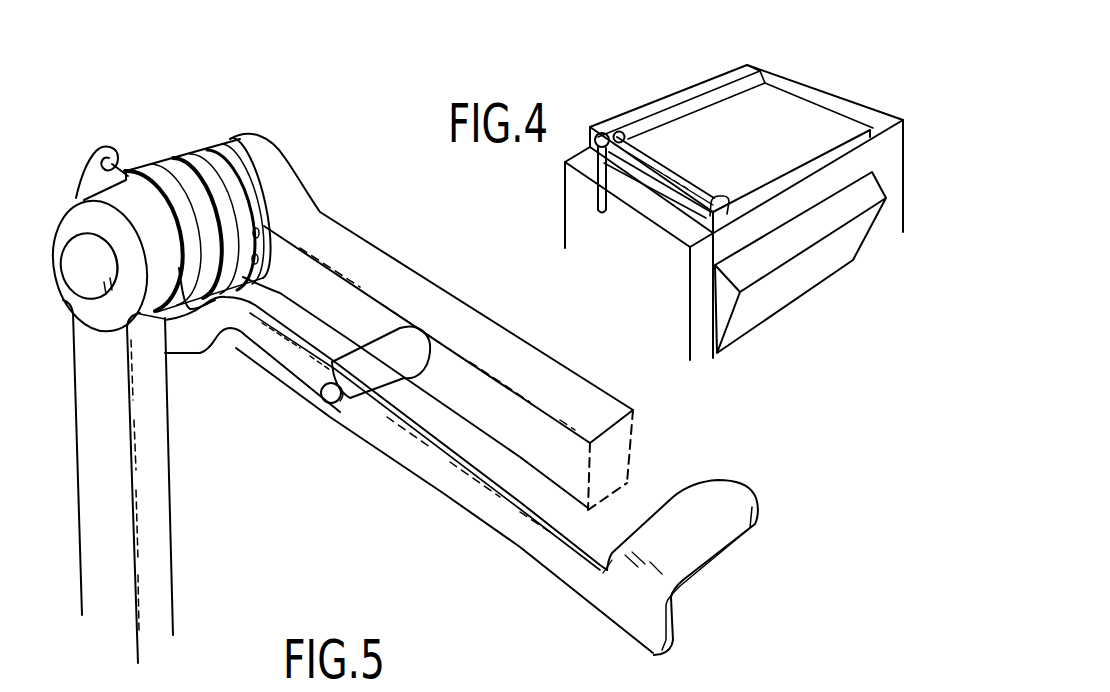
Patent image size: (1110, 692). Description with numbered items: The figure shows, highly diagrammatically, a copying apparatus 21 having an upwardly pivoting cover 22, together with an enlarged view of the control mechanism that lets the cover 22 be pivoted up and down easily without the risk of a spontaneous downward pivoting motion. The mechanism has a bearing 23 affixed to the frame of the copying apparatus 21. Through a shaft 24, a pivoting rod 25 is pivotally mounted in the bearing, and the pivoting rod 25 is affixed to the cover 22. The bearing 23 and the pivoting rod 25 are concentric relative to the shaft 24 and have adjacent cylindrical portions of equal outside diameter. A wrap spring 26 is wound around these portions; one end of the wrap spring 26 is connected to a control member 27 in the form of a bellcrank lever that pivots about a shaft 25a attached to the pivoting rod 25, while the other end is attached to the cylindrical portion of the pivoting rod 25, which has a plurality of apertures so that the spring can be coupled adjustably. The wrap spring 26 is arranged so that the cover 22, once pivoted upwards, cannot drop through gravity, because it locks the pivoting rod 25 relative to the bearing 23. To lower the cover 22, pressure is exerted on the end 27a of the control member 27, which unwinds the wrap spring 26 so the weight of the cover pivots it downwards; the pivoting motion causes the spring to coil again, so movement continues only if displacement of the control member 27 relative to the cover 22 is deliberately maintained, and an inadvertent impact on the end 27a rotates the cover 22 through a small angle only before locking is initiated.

In FIG. 4, the copying apparatus 21 is at (818, 93).
In FIG. 4, the cover 22 is at (763, 110).
In FIG. 5, the bearing 23 is at (158, 468).
In FIG. 5, the shaft 24 is at (65, 282).
In FIG. 5, the pivoting rod 25 is at (372, 252).
In FIG. 5, the shaft 25a is at (325, 401).
In FIG. 5, the wrap spring 26 is at (172, 163).
In FIG. 5, the control member 27 is at (477, 461).
In FIG. 5, the end 27a is at (720, 533).